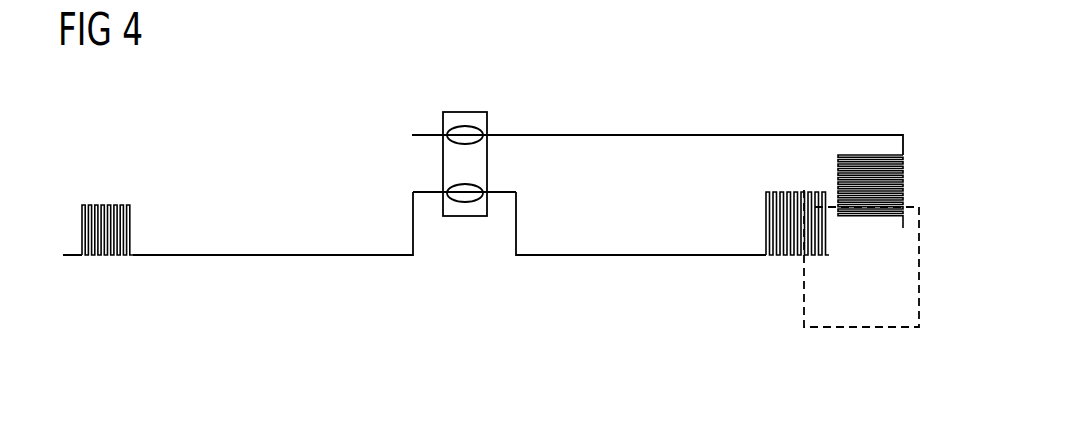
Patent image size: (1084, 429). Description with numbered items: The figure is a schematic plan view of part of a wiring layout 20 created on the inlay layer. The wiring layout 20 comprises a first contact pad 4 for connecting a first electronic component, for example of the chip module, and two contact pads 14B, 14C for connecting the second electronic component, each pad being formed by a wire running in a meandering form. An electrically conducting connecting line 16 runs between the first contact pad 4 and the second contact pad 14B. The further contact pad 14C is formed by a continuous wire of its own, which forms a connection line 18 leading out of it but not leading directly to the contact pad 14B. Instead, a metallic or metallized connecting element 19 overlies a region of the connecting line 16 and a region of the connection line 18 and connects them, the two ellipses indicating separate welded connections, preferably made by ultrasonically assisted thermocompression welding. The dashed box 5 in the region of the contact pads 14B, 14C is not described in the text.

The first contact pad 4 is at (118, 228).
The detection unit 5 is at (866, 330).
The second contact pad 14B is at (790, 226).
The further contact pad 14C is at (870, 170).
The connecting line 16 is at (323, 253).
The connection line 18 is at (626, 133).
The connecting element 19 is at (462, 110).
The wiring layout 20 is at (320, 130).